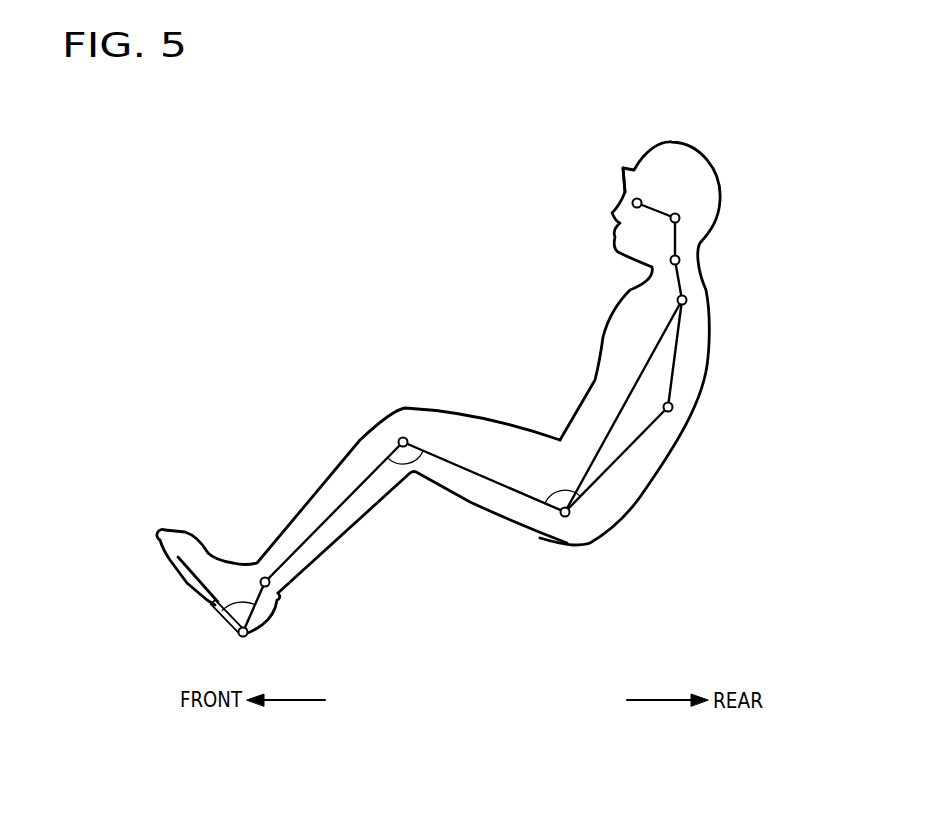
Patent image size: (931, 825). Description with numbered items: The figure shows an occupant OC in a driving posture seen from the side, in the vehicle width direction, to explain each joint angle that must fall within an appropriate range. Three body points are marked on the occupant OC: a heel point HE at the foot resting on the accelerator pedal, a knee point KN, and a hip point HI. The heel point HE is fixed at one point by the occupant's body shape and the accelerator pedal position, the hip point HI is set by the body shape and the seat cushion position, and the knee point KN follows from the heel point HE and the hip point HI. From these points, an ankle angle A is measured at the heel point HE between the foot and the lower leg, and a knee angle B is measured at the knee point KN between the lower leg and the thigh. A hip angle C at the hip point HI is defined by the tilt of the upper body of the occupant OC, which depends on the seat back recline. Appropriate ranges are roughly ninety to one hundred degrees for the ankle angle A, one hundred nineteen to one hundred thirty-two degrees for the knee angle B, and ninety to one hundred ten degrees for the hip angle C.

The occupant OC is at (705, 138).
The knee point KN is at (403, 437).
The hip point HI is at (563, 517).
The heel point HE is at (251, 630).
The ankle angle A is at (228, 603).
The knee angle B is at (412, 474).
The hip angle C is at (558, 486).